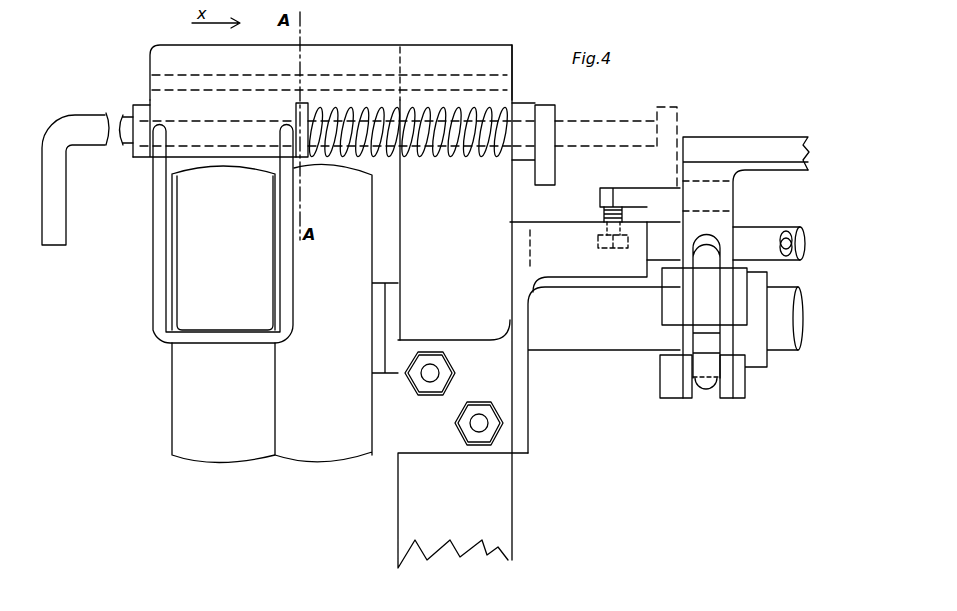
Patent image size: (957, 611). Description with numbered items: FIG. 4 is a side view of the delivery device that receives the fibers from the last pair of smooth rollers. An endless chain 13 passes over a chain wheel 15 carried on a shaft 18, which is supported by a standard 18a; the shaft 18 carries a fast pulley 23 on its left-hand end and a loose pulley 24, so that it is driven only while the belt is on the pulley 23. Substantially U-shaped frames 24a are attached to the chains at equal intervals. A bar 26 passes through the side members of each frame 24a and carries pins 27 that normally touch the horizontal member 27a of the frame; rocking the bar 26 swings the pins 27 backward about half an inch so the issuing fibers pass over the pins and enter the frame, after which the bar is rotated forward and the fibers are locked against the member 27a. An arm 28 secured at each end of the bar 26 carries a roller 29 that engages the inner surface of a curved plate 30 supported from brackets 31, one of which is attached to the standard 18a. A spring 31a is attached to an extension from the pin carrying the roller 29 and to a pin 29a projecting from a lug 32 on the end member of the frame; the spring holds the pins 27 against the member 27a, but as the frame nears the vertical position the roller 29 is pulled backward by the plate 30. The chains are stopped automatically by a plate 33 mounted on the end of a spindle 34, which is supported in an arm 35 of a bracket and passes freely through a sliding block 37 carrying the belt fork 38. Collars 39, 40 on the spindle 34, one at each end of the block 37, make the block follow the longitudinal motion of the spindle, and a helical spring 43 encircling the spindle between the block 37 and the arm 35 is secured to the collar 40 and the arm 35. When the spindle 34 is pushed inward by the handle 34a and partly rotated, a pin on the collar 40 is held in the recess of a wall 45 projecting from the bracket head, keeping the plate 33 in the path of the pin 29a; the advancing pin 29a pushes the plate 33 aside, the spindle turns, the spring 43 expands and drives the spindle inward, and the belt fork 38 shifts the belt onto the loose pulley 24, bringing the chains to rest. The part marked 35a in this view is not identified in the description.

The endless chain 13 is at (667, 310).
The chain wheel 15 is at (722, 265).
The shaft 18 is at (604, 370).
The standard 18a is at (463, 306).
The pulley 23 is at (223, 314).
The loose pulley 24 is at (336, 313).
The U shaped frame 24a is at (700, 200).
The bar 26 is at (769, 243).
The pin 27 is at (787, 231).
The horizontal member 27a is at (770, 153).
The arm 28 is at (663, 241).
The roller 29 is at (630, 250).
The pin 29a is at (635, 193).
The curved plate 30 is at (578, 257).
The bracket 31 is at (454, 398).
The spring 31a is at (602, 213).
The lug 32 is at (735, 210).
The plate 33 is at (557, 117).
The spindle 34 is at (120, 117).
The handle 34a is at (66, 180).
The arm 35 is at (525, 107).
The housing 35a is at (331, 72).
The sliding block 37 is at (214, 128).
The belt fork 38 is at (157, 218).
The collar 39 is at (139, 105).
The collar 40 is at (306, 108).
The helical spring 43 is at (448, 145).
The wall 45 is at (408, 108).